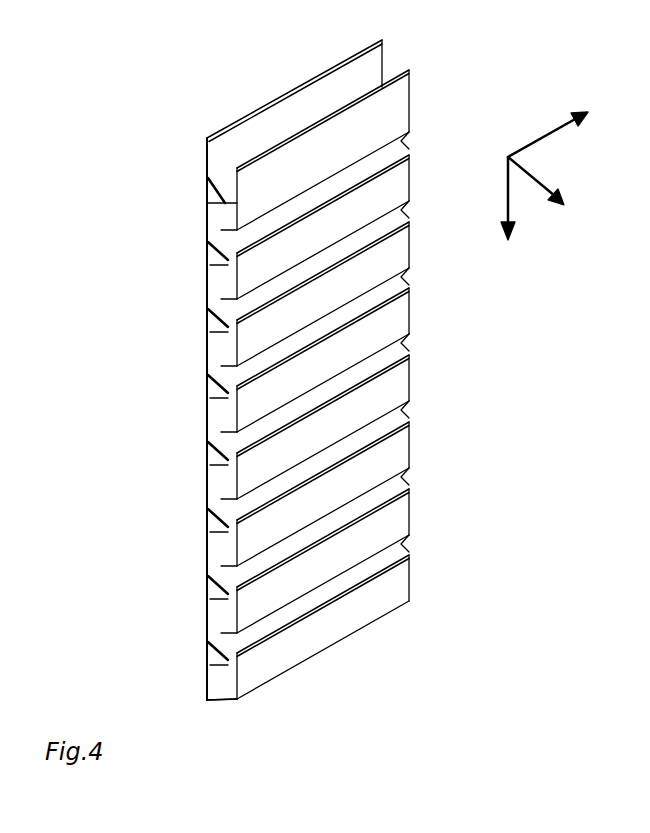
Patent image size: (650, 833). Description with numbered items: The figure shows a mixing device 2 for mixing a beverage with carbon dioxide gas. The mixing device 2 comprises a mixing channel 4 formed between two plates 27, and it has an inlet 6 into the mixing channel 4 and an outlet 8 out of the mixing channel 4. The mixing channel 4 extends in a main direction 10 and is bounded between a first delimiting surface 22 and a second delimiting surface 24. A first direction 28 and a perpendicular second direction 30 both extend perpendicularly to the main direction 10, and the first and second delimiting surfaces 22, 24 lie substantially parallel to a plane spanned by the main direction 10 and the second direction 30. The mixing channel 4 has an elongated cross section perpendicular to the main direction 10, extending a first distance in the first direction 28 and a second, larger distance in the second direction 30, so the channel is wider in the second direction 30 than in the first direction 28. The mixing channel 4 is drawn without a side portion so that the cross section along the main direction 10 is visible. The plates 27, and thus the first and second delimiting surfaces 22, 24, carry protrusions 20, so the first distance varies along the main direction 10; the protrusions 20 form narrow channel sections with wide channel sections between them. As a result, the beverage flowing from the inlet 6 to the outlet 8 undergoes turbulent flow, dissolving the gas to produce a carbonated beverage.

The mixing device 2 is at (78, 89).
The mixing channel 4 is at (223, 167).
The inlet 6 is at (301, 110).
The outlet 8 is at (229, 696).
The main direction 10 is at (506, 195).
The protrusions 20 is at (222, 505).
The first delimiting surface 22 is at (220, 281).
The second delimiting surface 24 is at (214, 346).
The plates 27 is at (228, 127).
The first direction 28 is at (537, 178).
The second direction 30 is at (537, 137).